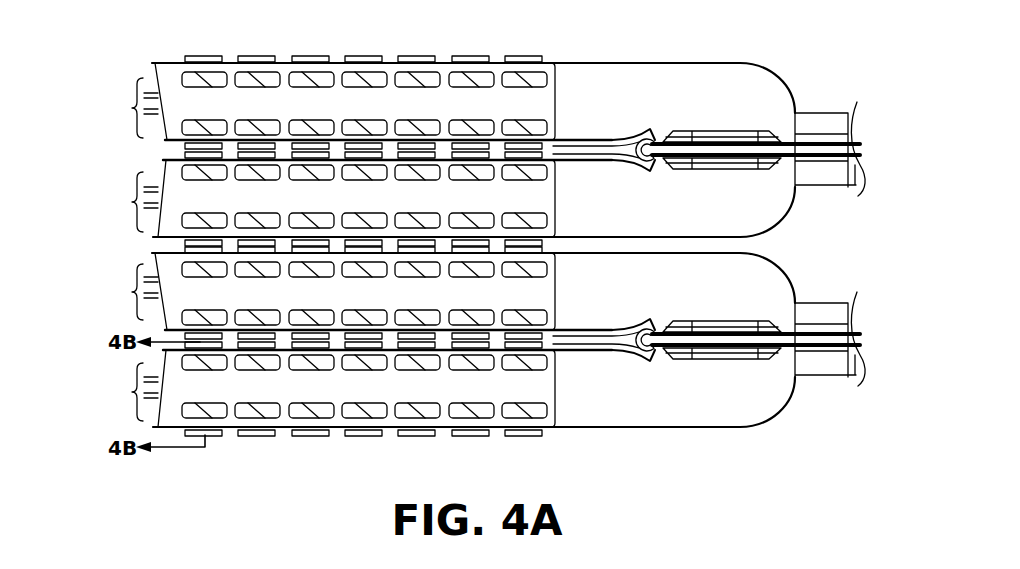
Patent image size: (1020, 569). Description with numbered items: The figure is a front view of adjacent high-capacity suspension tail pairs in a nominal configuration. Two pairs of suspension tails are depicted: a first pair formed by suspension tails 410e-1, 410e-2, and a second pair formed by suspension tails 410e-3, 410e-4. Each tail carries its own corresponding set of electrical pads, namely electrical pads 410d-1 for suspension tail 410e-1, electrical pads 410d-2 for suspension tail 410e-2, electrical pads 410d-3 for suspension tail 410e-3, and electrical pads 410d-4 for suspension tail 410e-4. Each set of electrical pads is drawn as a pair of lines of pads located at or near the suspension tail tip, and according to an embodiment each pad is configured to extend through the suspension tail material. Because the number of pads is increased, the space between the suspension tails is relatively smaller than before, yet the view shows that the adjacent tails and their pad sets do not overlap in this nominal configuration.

The set of electrical pads 410d-1 is at (131, 108).
The set of electrical pads 410d-2 is at (131, 202).
The set of electrical pads 410d-3 is at (131, 292).
The set of electrical pads 410d-4 is at (131, 392).
The suspension tail 410e-1 is at (655, 74).
The suspension tail 410e-2 is at (752, 195).
The suspension tail 410e-3 is at (750, 305).
The suspension tail 410e-4 is at (692, 413).